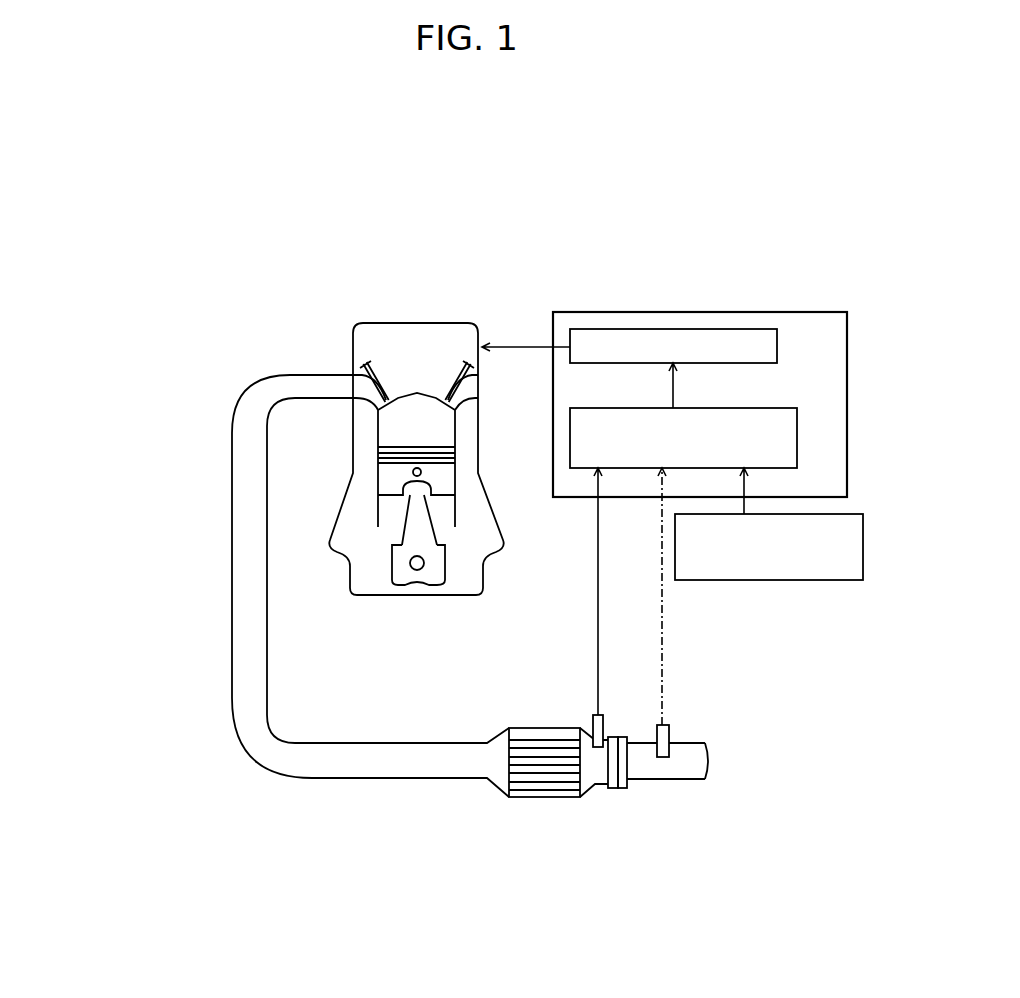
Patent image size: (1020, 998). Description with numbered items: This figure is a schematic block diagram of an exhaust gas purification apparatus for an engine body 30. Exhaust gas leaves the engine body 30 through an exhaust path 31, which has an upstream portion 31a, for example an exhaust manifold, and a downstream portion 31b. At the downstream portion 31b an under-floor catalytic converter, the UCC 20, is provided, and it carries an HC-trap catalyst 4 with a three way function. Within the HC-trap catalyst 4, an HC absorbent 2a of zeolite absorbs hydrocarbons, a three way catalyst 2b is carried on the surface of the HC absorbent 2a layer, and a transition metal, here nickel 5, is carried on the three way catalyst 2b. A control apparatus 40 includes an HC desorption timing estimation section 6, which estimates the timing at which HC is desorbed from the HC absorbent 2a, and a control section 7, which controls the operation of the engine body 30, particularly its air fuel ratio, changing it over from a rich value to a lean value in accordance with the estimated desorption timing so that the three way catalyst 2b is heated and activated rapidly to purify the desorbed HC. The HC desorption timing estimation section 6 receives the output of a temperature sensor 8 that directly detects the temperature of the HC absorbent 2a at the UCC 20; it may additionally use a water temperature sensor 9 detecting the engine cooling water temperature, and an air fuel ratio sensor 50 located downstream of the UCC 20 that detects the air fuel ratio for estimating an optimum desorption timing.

The engine body 30 is at (458, 310).
The control apparatus 40 is at (705, 377).
The control section 7 is at (777, 346).
The HC desorption timing estimation section 6 is at (797, 437).
The water temperature sensor 9 is at (863, 530).
The exhaust path 31 is at (379, 570).
The upstream portion of exhaust path 31a is at (292, 385).
The downstream portion of exhaust path 31b is at (370, 705).
The under-floor catalytic converter (UCC) 20 is at (585, 813).
The HC-trap catalyst with three way function 4 is at (585, 851).
The HC absorbent 2a is at (449, 838).
The three way catalyst 2b is at (633, 851).
The nickel (transition metal) 5 is at (543, 787).
The temperature sensor 8 is at (593, 716).
The air fuel ratio sensor 50 is at (672, 728).